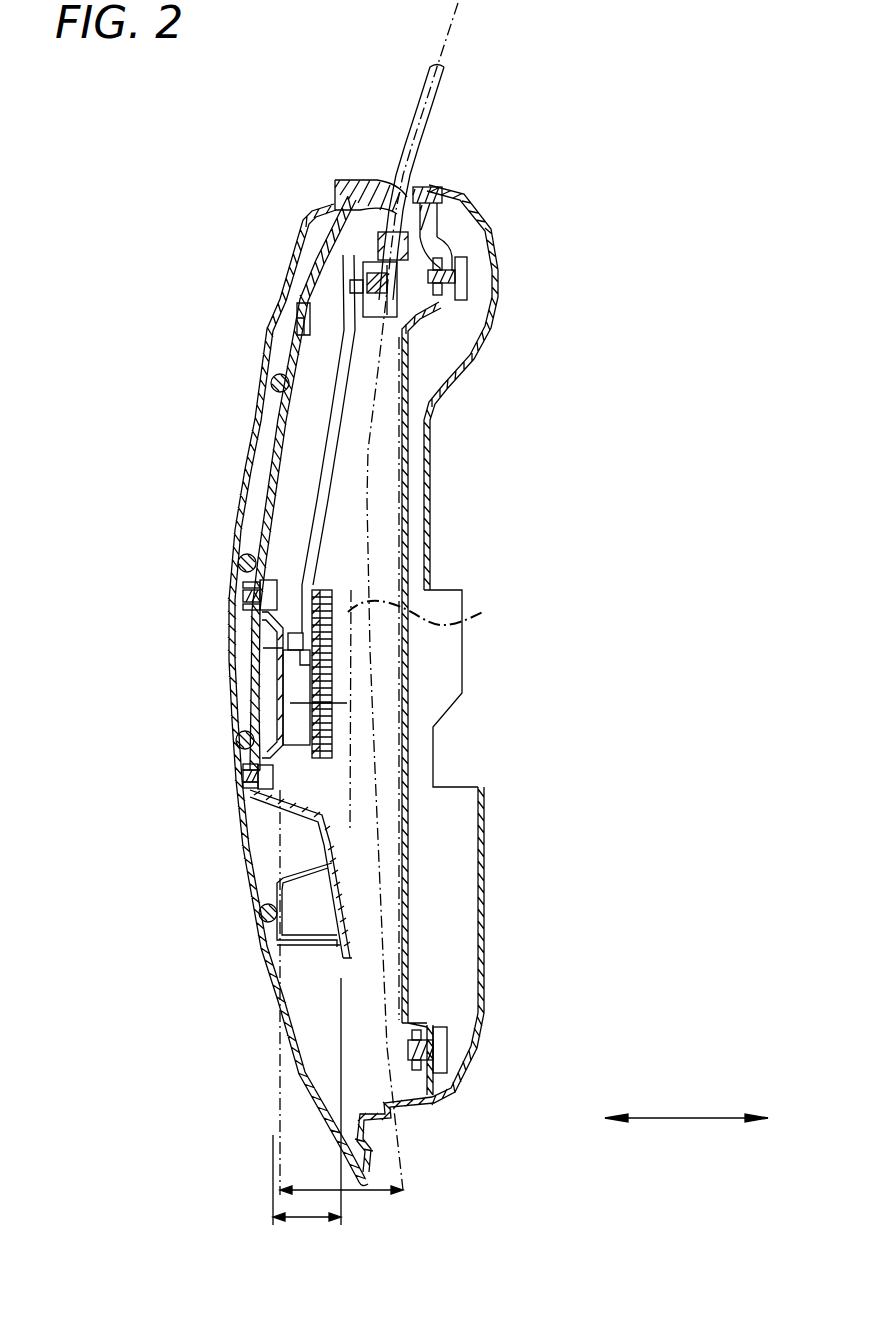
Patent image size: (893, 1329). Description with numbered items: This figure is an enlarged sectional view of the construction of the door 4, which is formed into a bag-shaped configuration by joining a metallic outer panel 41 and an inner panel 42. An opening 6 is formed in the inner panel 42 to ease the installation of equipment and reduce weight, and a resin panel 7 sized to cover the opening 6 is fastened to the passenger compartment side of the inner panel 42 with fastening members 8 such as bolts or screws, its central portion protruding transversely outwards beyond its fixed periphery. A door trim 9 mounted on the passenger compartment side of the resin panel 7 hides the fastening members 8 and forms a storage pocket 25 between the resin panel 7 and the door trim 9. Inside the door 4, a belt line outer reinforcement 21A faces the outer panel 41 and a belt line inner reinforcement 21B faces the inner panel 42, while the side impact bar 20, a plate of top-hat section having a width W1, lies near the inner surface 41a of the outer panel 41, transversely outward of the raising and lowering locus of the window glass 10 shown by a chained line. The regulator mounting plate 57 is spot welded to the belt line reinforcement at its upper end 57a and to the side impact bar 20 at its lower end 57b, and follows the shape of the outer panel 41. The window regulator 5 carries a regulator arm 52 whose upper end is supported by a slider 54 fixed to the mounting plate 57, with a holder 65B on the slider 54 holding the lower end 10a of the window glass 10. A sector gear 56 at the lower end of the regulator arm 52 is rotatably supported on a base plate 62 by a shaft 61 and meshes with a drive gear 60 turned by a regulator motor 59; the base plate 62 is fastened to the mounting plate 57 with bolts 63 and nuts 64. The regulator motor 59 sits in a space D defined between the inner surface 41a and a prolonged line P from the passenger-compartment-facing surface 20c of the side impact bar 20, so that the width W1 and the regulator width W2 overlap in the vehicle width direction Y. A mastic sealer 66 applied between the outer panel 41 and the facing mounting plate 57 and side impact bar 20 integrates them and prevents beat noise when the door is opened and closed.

The door 4 is at (468, 498).
The window regulator 5 is at (236, 657).
The opening 6 is at (433, 1027).
The resin panel 7 is at (412, 410).
The fastening members 8 is at (480, 280).
The door trim 9 is at (433, 542).
The window glass 10 is at (422, 100).
The lower end 10a is at (380, 248).
The side impact bar 20 is at (307, 972).
The surface 20c is at (342, 926).
The belt line outer reinforcement 21A is at (347, 230).
The belt line inner reinforcement 21B is at (438, 232).
The storage pocket 25 is at (458, 800).
The outer panel 41 is at (247, 473).
The inner surface 41a is at (257, 833).
The inner panel 42 is at (450, 240).
The regulator arm 52 is at (330, 415).
The slider 54 is at (405, 323).
The sector gear 56 is at (320, 594).
The regulator mounting plate 57 is at (268, 505).
The upper end 57a is at (305, 315).
The lower end 57b is at (352, 958).
The regulator motor 59 is at (290, 722).
The drive gear 60 is at (330, 722).
The shaft 61 is at (337, 650).
The base plate 62 is at (277, 684).
The bolts 63 is at (275, 585).
The nuts 64 is at (250, 607).
The holder 65B is at (388, 307).
The mastic sealer 66 is at (274, 383).
The prolonged line P is at (428, 613).
The space D is at (345, 815).
The width W1 is at (307, 1234).
The width W2 is at (358, 1198).
The width direction Y is at (687, 1118).